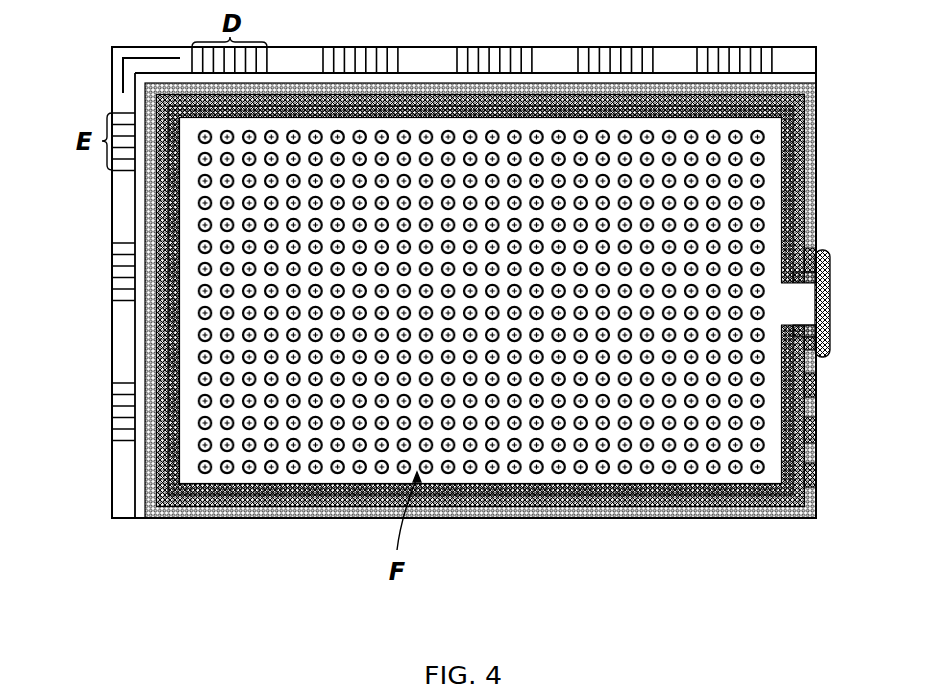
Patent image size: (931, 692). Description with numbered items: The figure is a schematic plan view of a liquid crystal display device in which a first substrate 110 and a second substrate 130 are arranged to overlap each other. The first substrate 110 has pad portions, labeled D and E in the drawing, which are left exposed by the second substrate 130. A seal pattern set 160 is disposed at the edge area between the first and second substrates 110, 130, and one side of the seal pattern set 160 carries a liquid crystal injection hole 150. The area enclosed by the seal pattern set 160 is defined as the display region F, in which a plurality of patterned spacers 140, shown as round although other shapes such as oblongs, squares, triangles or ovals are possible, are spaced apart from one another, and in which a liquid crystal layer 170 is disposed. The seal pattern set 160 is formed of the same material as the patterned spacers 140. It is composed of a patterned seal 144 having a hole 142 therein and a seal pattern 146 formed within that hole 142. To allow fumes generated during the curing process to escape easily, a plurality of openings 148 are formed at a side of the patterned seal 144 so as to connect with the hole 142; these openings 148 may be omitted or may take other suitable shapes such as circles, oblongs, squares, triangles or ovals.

The first substrate 110 is at (112, 460).
The second substrate 130 is at (135, 493).
The patterned spacers 140 is at (317, 468).
The hole 142 is at (723, 510).
The patterned seal 144 is at (547, 517).
The seal pattern 146 is at (597, 517).
The openings 148 is at (824, 392).
The liquid crystal injection hole 150 is at (806, 307).
The seal pattern set 160 is at (480, 360).
The liquid crystal layer 170 is at (193, 329).